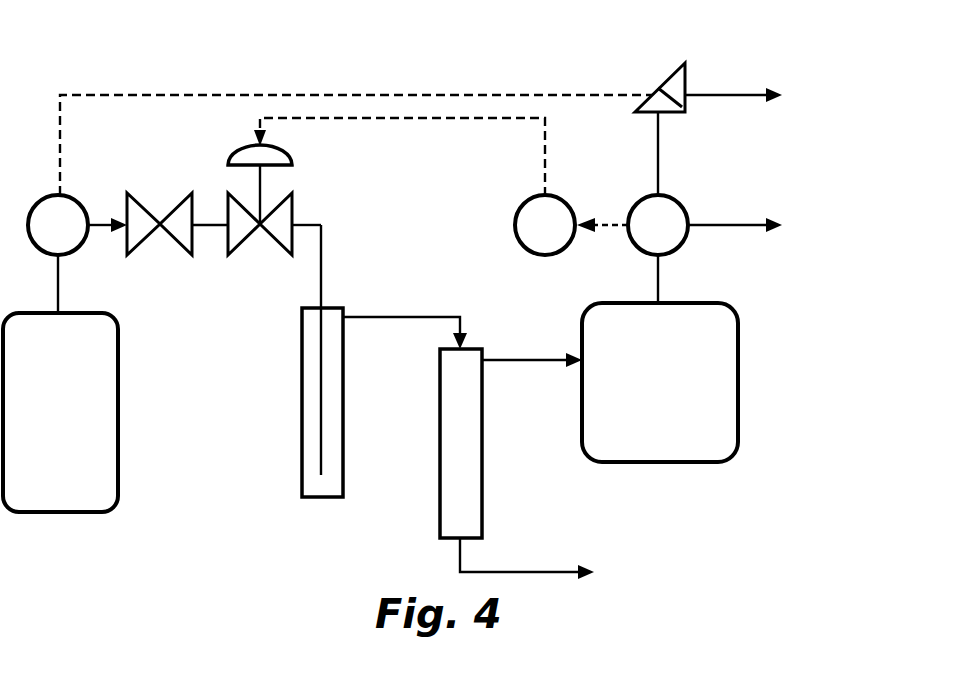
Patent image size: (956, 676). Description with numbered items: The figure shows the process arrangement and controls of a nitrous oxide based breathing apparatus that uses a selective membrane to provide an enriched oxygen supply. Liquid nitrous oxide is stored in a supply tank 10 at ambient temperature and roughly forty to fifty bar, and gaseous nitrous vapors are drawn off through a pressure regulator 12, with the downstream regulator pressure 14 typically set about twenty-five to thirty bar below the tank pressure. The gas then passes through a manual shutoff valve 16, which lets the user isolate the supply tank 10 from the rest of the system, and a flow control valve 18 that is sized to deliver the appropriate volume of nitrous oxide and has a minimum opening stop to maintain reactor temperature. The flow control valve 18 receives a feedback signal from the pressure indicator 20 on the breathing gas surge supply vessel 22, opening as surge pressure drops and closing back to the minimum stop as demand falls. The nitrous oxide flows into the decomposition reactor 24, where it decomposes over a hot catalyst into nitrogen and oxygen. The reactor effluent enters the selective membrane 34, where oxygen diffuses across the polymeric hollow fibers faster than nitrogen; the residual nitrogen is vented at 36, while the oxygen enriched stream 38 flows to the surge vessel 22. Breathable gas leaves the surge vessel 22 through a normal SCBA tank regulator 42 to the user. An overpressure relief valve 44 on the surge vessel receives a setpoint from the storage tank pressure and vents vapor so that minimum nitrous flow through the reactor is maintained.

The supply tank 10 is at (118, 400).
The pressure regulator 12 is at (44, 203).
The downstream regulator pressure 14 is at (105, 252).
The manual shutoff valve 16 is at (143, 200).
The flow control valve 18 is at (247, 243).
The pressure indicator 20 is at (516, 236).
The breathing gas surge supply vessel 22 is at (738, 380).
The decomposition reactor 24 is at (302, 395).
The selective membrane 34 is at (440, 466).
The nitrogen vent 36 is at (648, 602).
The oxygen enriched stream 38 is at (521, 362).
The SCBA tank regulator 42 is at (684, 201).
The overpressure relief valve 44 is at (662, 87).